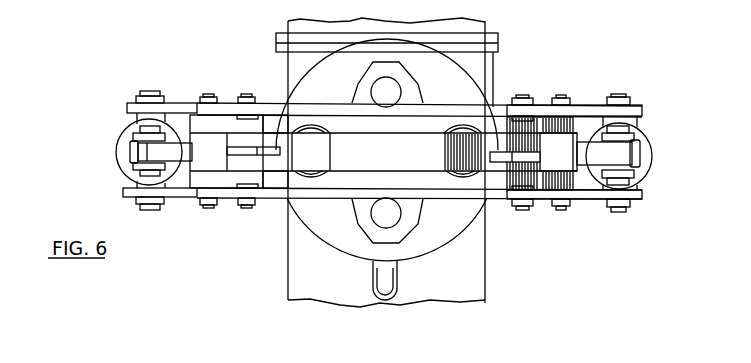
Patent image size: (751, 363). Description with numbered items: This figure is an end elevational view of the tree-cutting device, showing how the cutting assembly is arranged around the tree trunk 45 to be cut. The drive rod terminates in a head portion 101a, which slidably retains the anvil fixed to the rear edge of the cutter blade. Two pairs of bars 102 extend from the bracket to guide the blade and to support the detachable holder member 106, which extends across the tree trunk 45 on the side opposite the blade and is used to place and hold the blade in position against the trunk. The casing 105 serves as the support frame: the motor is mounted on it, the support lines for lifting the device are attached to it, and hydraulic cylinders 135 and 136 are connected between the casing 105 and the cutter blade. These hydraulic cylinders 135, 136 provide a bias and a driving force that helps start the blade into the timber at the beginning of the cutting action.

The tree trunk 45 is at (481, 265).
The casing 105 is at (494, 69).
The head portion 101a is at (398, 79).
The bars 102 is at (226, 108).
The detachable holder member 106 is at (271, 167).
The hydraulic cylinder 136 is at (111, 0).
The hydraulic cylinder 135 is at (657, 149).